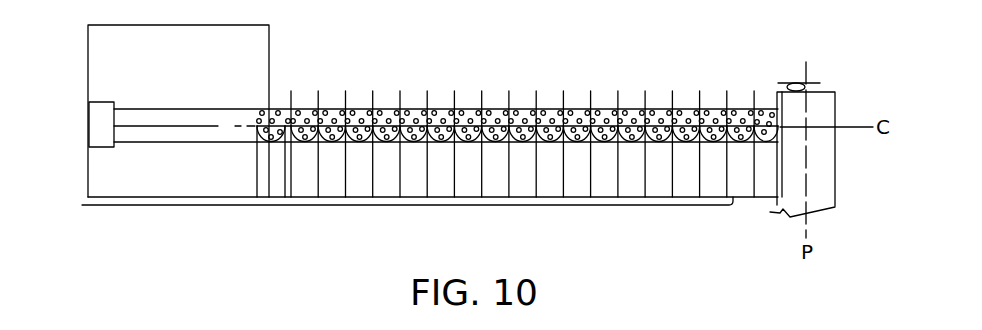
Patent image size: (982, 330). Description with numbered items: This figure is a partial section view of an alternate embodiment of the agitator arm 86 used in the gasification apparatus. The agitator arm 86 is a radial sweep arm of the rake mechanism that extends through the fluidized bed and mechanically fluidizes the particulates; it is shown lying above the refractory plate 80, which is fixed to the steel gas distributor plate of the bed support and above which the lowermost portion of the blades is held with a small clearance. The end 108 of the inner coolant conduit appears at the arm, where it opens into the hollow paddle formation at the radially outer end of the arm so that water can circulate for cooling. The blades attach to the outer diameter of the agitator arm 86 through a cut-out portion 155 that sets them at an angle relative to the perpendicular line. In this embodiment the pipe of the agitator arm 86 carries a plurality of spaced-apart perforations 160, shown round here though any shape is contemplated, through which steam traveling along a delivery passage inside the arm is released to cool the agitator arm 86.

The refractory plate 80 is at (175, 206).
The agitator arm 86 is at (442, 108).
The end of inner conduit 108 is at (100, 117).
The cut-out portion 155 is at (392, 128).
The perforations 160 is at (607, 110).